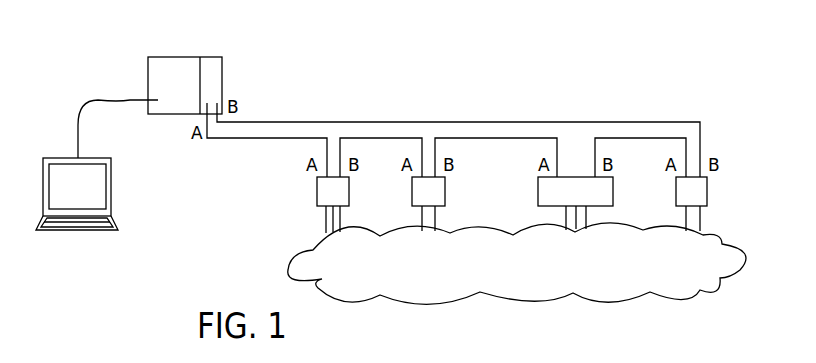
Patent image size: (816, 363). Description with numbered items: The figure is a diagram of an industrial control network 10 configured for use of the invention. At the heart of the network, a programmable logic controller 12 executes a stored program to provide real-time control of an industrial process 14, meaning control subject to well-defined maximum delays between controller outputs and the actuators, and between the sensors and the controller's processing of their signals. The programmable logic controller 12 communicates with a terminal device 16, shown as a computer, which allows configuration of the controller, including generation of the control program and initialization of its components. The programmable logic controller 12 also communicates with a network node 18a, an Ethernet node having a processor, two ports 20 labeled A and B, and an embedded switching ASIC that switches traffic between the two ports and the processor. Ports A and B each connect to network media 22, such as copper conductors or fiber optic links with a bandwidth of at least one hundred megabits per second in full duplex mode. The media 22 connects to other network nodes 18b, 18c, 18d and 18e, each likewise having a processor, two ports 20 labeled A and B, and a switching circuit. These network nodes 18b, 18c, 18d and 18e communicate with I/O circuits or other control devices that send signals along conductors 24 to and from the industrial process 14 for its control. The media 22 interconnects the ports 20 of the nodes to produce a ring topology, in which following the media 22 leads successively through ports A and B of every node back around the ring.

The industrial control network 10 is at (624, 53).
The programmable logic controller 12 is at (176, 57).
The industrial process 14 is at (540, 273).
The terminal device 16 is at (43, 170).
The network node 18a is at (211, 72).
The network node 18b is at (317, 190).
The network node 18c is at (412, 190).
The network node 18d is at (591, 200).
The network node 18e is at (703, 190).
The ports 20 is at (193, 152).
The network media 22 is at (490, 122).
The conductors 24 is at (311, 221).